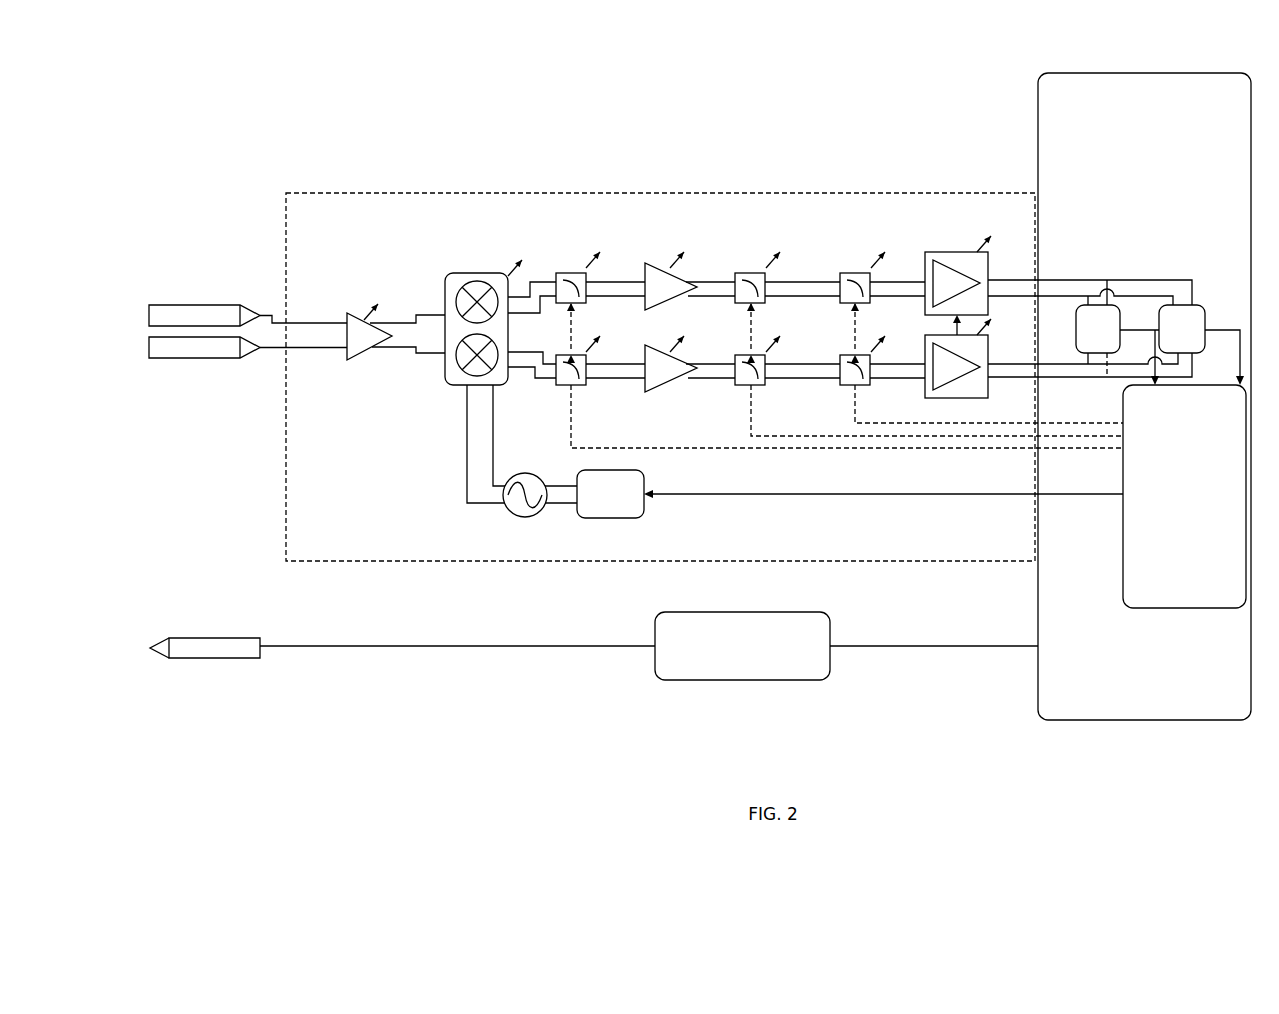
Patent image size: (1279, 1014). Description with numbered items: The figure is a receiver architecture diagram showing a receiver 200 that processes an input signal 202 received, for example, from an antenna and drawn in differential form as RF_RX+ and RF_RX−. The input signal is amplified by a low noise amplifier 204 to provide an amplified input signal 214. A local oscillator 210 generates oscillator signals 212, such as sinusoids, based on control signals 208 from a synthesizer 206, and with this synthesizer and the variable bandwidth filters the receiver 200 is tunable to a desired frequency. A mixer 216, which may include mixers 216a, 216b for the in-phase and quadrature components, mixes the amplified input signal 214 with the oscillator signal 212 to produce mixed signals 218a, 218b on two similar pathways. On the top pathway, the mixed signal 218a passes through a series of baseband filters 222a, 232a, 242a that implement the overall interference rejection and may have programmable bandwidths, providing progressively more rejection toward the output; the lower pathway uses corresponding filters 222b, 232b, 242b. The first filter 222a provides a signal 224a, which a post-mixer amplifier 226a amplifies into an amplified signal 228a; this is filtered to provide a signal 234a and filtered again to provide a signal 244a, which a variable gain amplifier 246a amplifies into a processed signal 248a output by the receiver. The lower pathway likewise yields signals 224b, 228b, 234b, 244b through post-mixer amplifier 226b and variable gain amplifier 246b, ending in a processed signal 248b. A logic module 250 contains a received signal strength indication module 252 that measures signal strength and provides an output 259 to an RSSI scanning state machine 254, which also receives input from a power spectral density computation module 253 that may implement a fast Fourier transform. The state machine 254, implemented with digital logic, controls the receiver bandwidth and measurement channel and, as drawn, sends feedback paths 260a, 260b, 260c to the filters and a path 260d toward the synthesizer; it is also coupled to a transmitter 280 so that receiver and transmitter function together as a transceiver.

The receiver 200 is at (308, 192).
The input signal 202 is at (300, 322).
The low noise amplifier 204 is at (355, 312).
The synthesizer 206 is at (588, 518).
The control signals 208 is at (557, 486).
The local oscillator 210 is at (510, 474).
The oscillator signal 212 is at (493, 418).
The amplified input signal 214 is at (400, 322).
The mixer 216 is at (447, 272).
The mixer 216a is at (470, 273).
The mixer 216b is at (448, 372).
The mixed signal 218a is at (521, 286).
The mixed signal 218b is at (532, 377).
The filter 222a is at (587, 304).
The filter 222b is at (588, 387).
The signal 224a is at (612, 280).
The signal 224b is at (612, 364).
The post-mixer amplifier 226a is at (650, 262).
The post-mixer amplifier 226b is at (652, 393).
The amplified signal 228a is at (720, 281).
The amplified signal 228b is at (692, 379).
The filter 232a is at (767, 304).
The filter 232b is at (768, 386).
The signal 234a is at (815, 280).
The signal 234b is at (800, 379).
The filter 242a is at (871, 304).
The filter 242b is at (871, 386).
The signal 244a is at (895, 278).
The signal 244b is at (905, 379).
The variable gain amplifier 246a is at (946, 252).
The variable gain amplifier 246b is at (988, 397).
The processed signal 248a is at (1000, 280).
The processed signal 248b is at (1000, 364).
The logic module 250 is at (1097, 73).
The received signal strength indication module 252 is at (1098, 329).
The power spectral density computation module 253 is at (1201, 345).
The RSSI scanning state machine 254 is at (1184, 496).
The output 259 is at (1132, 320).
The control signal to third baseband filter 260a is at (873, 424).
The control signal to second baseband filter 260b is at (915, 437).
The control signal to first baseband filter 260c is at (1011, 449).
The control signal to synthesizer 260d is at (735, 495).
The transmitter 280 is at (690, 680).